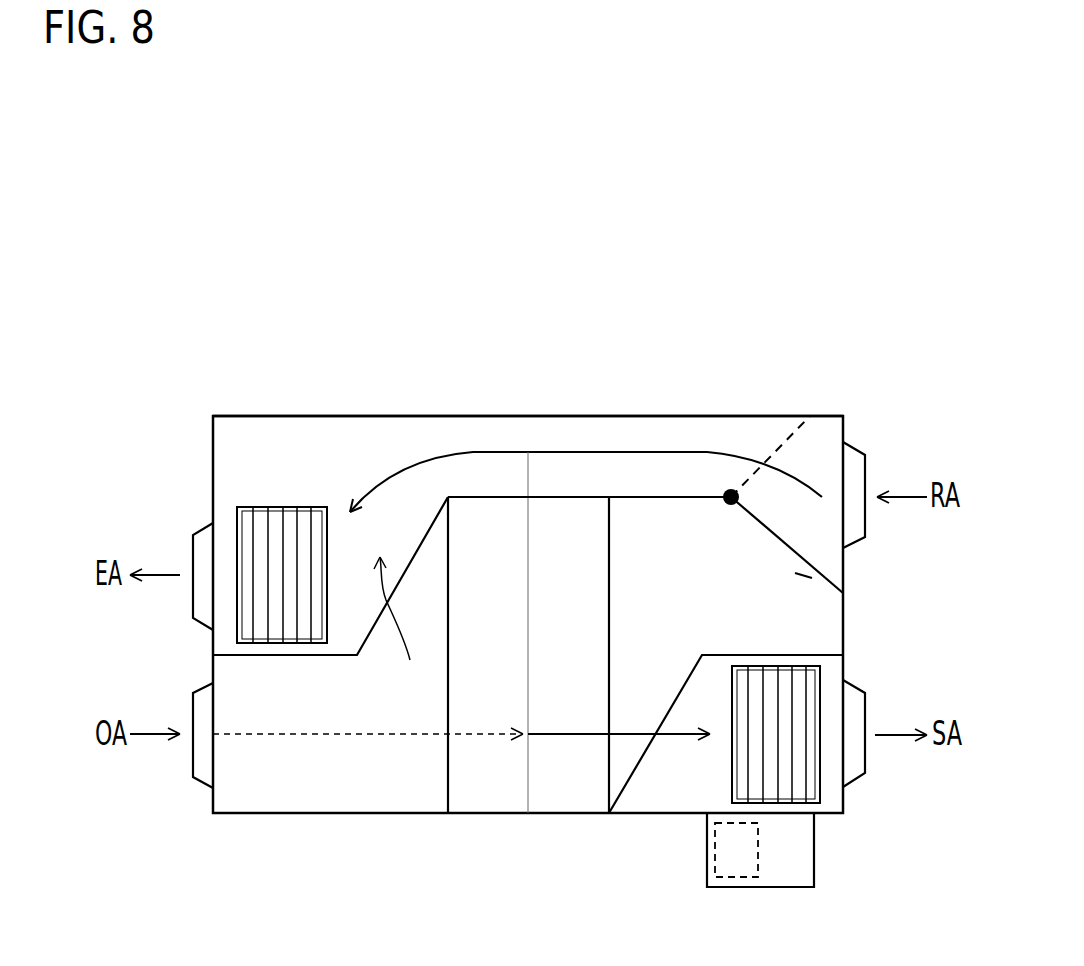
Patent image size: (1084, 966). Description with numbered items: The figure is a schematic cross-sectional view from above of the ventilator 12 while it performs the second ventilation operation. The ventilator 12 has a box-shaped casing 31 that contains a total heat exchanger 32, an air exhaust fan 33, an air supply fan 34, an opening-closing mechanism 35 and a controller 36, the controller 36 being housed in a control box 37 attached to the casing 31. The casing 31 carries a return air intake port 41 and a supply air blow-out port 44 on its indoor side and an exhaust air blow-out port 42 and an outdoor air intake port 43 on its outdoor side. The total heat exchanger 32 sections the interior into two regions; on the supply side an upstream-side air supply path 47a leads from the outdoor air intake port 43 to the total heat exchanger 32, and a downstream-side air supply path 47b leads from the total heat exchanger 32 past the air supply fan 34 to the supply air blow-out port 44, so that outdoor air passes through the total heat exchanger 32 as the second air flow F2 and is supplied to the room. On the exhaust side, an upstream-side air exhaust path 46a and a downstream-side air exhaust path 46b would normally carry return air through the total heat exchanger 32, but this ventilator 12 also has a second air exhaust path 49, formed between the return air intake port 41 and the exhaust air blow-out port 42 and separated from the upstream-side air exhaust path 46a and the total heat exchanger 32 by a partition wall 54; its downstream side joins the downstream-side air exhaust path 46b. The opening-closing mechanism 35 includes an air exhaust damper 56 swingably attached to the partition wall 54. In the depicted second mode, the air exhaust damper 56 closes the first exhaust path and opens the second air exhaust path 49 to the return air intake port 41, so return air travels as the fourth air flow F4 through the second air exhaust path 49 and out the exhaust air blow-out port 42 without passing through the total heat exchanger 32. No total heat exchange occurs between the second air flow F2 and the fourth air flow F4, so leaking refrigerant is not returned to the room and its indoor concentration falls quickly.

The ventilator 12 is at (788, 345).
The casing 31 is at (340, 416).
The total heat exchanger 32 is at (585, 792).
The air exhaust fan 33 is at (272, 518).
The air supply fan 34 is at (750, 676).
The opening-closing mechanism 35 is at (763, 445).
The controller 36 is at (735, 877).
The control box 37 is at (793, 887).
The return air intake port 41 is at (865, 478).
The exhaust air blow-out port 42 is at (193, 556).
The outdoor air intake port 43 is at (193, 750).
The supply air blow-out port 44 is at (868, 757).
The upstream-side air exhaust path 46a is at (800, 623).
The downstream-side air exhaust path 46b is at (330, 610).
The upstream-side air supply path 47a is at (413, 768).
The downstream-side air supply path 47b is at (658, 792).
The second air exhaust path 49 is at (630, 445).
The partition wall 54 is at (663, 500).
The air exhaust damper 56 is at (768, 537).
The second air flow F2 is at (567, 734).
The fourth air flow F4 is at (528, 452).